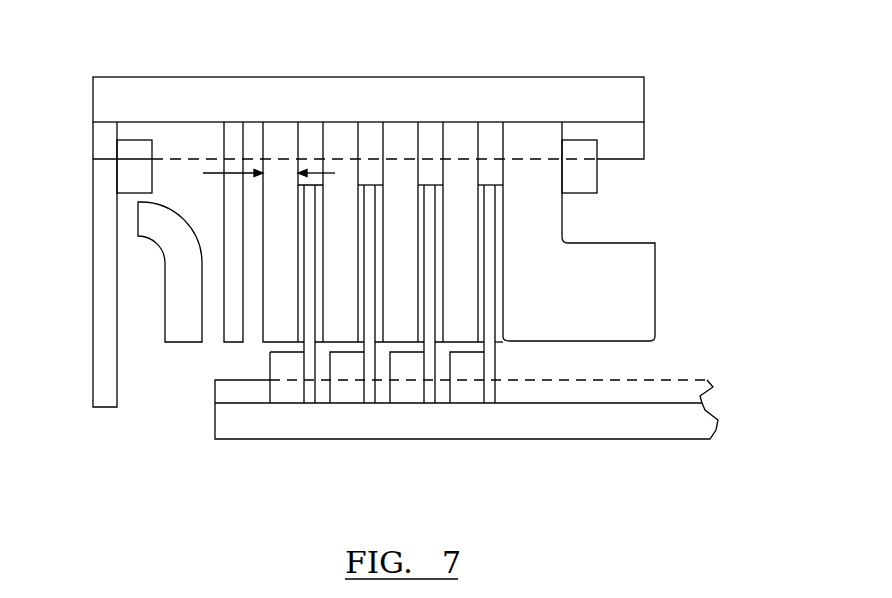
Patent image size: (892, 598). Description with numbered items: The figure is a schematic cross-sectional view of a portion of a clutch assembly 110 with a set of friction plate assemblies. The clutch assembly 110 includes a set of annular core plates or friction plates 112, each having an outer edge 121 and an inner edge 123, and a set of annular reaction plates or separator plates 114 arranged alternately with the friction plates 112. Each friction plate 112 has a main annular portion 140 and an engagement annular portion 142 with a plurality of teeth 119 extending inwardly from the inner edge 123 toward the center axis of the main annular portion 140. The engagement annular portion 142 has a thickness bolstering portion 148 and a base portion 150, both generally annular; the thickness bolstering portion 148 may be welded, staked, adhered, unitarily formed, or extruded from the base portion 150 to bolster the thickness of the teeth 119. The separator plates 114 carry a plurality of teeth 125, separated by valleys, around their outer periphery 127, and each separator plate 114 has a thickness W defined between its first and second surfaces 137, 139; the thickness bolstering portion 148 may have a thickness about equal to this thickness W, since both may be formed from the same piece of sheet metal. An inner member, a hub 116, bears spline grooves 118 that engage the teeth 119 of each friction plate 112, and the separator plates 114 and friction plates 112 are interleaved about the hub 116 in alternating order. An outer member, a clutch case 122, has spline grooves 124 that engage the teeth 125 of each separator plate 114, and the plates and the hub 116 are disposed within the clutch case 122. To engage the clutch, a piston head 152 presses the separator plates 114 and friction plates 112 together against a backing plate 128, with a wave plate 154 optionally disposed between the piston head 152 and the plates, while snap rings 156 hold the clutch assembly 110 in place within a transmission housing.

The clutch assembly 110 is at (389, 255).
The friction plates 112 is at (506, 365).
The separator plates 114 is at (275, 303).
The hub 116 is at (233, 425).
The spline grooves 118 is at (274, 390).
The teeth 119 is at (294, 392).
The outer edge 121 is at (490, 187).
The clutch case 122 is at (622, 143).
The inner edge 123 is at (472, 405).
The spline grooves 124 is at (477, 145).
The teeth 125 is at (280, 138).
The outer periphery 127 is at (345, 116).
The backing plate 128 is at (625, 290).
The first surface 137 is at (261, 167).
The second surface 139 is at (300, 163).
The main annular portion 140 is at (430, 190).
The engagement annular portion 142 is at (406, 413).
The thickness bolstering portion 148 is at (285, 363).
The base portion 150 is at (493, 392).
The piston head 152 is at (182, 273).
The wave plate 154 is at (235, 202).
The snap rings 156 is at (128, 180).